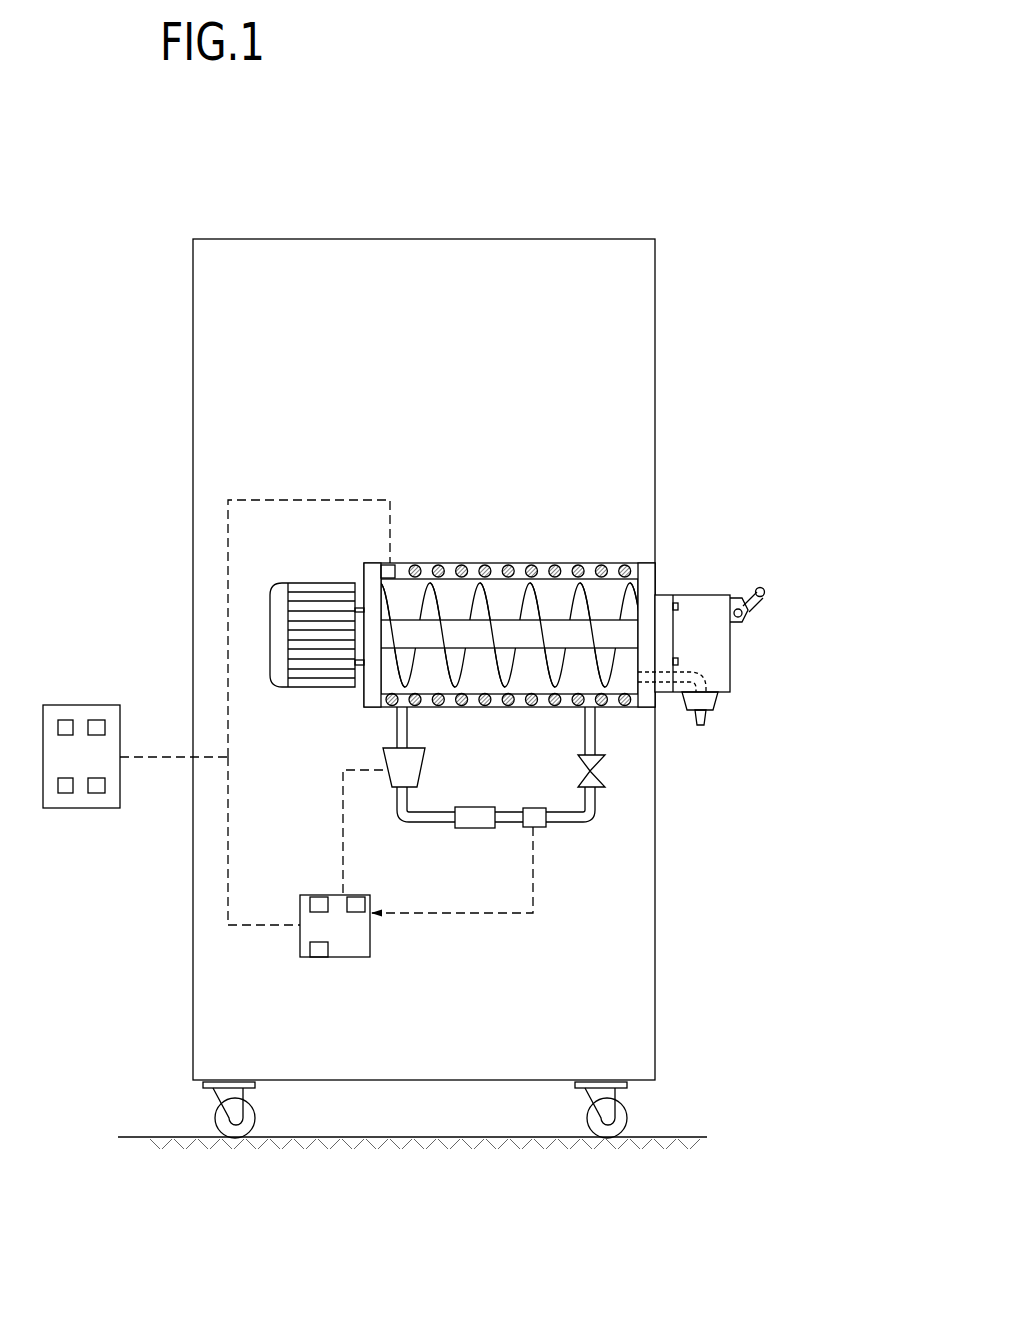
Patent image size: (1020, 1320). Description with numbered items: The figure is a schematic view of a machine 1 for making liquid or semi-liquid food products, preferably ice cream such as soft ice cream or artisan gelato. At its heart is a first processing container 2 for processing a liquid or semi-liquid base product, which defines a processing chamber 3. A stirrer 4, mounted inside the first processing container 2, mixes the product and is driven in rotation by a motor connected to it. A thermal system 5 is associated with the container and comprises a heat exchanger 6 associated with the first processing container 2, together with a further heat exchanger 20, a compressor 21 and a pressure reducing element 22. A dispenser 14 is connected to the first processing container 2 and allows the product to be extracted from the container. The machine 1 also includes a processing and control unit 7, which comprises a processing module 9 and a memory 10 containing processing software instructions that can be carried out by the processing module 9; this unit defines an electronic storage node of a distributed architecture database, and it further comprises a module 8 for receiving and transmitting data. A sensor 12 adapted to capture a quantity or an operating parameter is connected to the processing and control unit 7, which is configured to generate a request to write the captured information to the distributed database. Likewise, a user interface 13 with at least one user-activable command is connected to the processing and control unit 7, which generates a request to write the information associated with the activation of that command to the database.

The machine 1 is at (706, 262).
The first processing container 2 is at (509, 546).
The processing chamber 3 is at (517, 574).
The stirrer 4 is at (610, 632).
The thermal system 5 is at (557, 830).
The heat exchanger 6 is at (557, 560).
The processing and control unit 7 is at (331, 901).
The module for receiving and transmitting data 8 is at (357, 915).
The processing module 9 is at (325, 895).
The memory 10 is at (325, 957).
The sensor 12 is at (402, 562).
The user interface 13 is at (85, 700).
The dispenser 14 is at (737, 628).
The further heat exchanger 20 is at (475, 830).
The compressor 21 is at (378, 755).
The pressure reducing element 22 is at (602, 805).